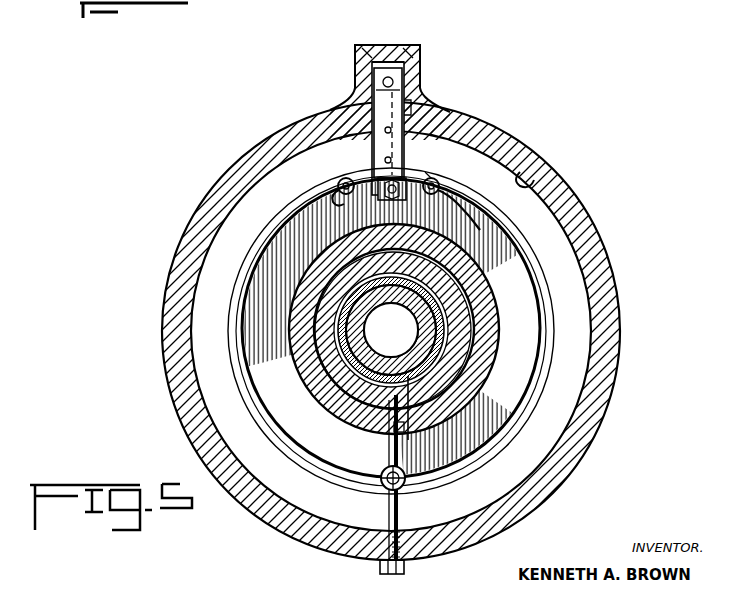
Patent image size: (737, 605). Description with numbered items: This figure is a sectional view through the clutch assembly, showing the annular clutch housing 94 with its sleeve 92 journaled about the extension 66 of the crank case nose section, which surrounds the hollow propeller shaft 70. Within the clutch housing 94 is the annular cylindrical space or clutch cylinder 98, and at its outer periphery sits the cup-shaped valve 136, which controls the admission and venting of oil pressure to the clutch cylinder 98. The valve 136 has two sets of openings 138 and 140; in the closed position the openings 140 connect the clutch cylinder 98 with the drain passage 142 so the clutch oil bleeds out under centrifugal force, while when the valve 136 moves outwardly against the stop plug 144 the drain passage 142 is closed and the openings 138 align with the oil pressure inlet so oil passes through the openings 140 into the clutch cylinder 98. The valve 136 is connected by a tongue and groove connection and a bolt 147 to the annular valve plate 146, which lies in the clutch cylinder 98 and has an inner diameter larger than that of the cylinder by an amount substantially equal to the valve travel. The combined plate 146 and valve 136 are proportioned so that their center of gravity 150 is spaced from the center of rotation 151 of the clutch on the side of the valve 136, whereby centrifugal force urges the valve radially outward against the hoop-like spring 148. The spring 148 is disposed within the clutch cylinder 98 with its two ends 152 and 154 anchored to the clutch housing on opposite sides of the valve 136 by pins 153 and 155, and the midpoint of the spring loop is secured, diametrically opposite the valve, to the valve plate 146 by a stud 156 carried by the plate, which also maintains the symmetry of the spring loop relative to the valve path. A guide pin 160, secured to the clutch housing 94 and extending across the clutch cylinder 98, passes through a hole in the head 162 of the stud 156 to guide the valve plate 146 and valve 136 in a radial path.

The extension of the crank case nose section 66 is at (494, 289).
The hollow propeller shaft 70 is at (405, 422).
The sleeve 92 is at (318, 279).
The clutch housing 94 is at (212, 212).
The clutch cylinder 98 is at (538, 170).
The valve 136 is at (375, 104).
The valve openings 138 is at (386, 133).
The valve openings 140 is at (398, 176).
The drain passage 142 is at (395, 85).
The stop plug 144 is at (373, 42).
The annular valve plate 146 is at (476, 485).
The bolt 147 is at (429, 165).
The spring 148 is at (252, 375).
The center of gravity 150 is at (403, 320).
The center of rotation 151 is at (404, 335).
The spring end 152 is at (352, 172).
The pin 153 is at (334, 196).
The spring end 154 is at (440, 180).
The pin 155 is at (440, 185).
The stud 156 is at (387, 518).
The guide pin 160 is at (399, 517).
The head of stud 162 is at (383, 468).